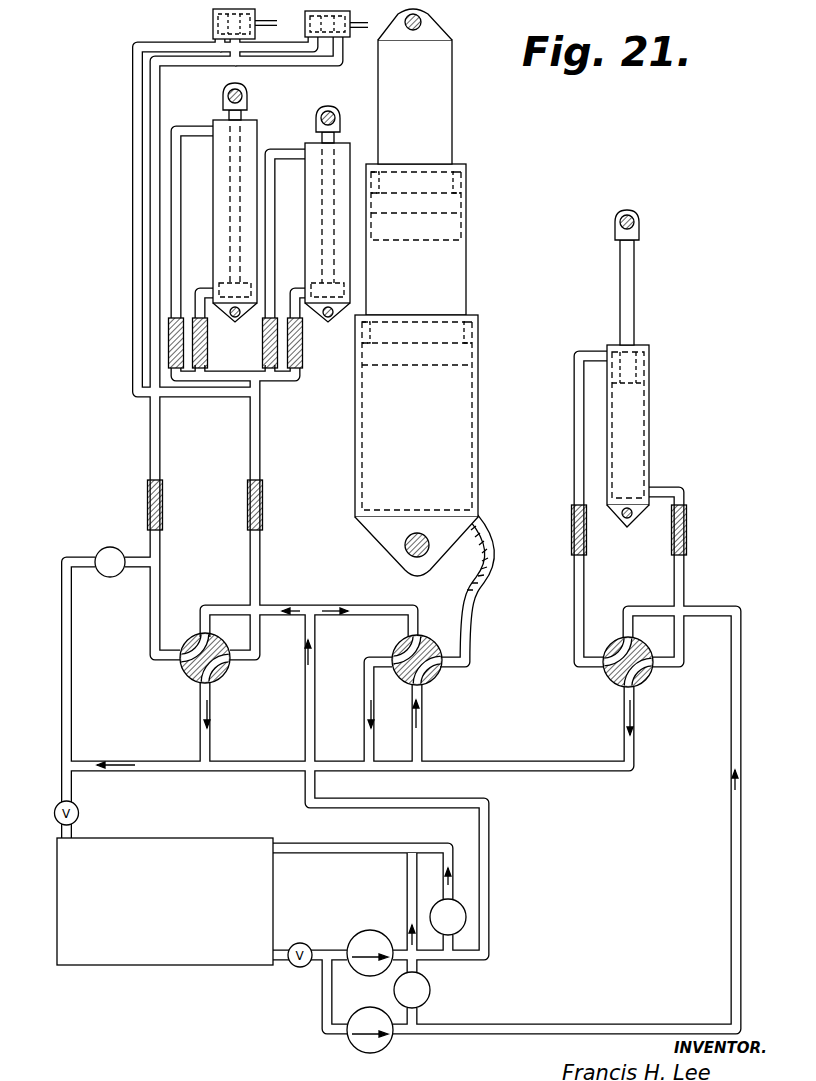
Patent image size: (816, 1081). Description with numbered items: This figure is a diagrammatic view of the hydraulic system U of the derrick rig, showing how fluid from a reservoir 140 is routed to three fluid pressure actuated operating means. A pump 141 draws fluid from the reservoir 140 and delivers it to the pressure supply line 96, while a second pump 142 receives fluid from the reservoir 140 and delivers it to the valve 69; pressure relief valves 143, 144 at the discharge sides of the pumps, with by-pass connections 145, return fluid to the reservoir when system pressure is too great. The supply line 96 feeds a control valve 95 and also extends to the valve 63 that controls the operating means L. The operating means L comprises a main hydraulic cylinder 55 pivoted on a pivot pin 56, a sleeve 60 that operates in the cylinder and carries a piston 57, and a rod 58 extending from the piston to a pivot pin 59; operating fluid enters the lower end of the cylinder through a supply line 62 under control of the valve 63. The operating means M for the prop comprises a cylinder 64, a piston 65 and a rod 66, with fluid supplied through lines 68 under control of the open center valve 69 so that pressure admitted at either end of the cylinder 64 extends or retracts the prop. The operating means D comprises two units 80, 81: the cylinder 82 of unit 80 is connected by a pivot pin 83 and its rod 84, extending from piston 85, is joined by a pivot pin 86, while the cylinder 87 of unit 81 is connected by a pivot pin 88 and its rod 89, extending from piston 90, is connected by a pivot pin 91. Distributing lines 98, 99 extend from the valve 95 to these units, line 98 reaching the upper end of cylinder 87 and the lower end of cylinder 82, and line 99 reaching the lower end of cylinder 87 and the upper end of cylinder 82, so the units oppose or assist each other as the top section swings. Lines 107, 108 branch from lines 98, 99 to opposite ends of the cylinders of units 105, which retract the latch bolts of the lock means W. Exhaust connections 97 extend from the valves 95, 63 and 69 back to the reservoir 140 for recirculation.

The main hydraulic cylinder 55 is at (416, 416).
The pivot pin 56 is at (400, 558).
The piston 57 is at (432, 215).
The rod 58 is at (444, 86).
The pivot pin 59 is at (425, 22).
The sleeve 60 is at (448, 239).
The supply line 62 is at (482, 578).
The valve 63 is at (442, 680).
The cylinder 64 is at (658, 452).
The piston 65 is at (630, 390).
The rod 66 is at (634, 316).
The lines 68 is at (688, 580).
The valve 69 is at (640, 688).
The fluid pressure actuated unit 80 is at (231, 213).
The fluid pressure actuated unit 81 is at (323, 214).
The cylinder 82 is at (218, 198).
The pivot pin 83 is at (236, 318).
The rod 84 is at (222, 118).
The piston 85 is at (221, 272).
The pivot pin 86 is at (226, 94).
The cylinder 87 is at (318, 226).
The pivot pin 88 is at (329, 318).
The rod 89 is at (318, 140).
The piston 90 is at (320, 275).
The pivot pin 91 is at (328, 108).
The control valve 95 is at (222, 684).
The pressure supply line 96 is at (296, 605).
The exhaust line 97 is at (162, 760).
The distributing line 98 is at (249, 558).
The distributing line 99 is at (160, 568).
The fluid pressure actuated unit 105 is at (255, 20).
The line 107 is at (137, 372).
The line 108 is at (148, 326).
The reservoir 140 is at (155, 965).
The pump 141 is at (370, 930).
The second pump 142 is at (372, 1053).
The pressure relief valve 143 is at (468, 908).
The pressure relief valve 144 is at (432, 988).
The by-pass connections 145 is at (412, 833).
The lock means W is at (212, 27).
The operating means D is at (212, 213).
The hydraulic system U is at (470, 193).
The operating means L is at (445, 293).
The operating means M is at (664, 385).